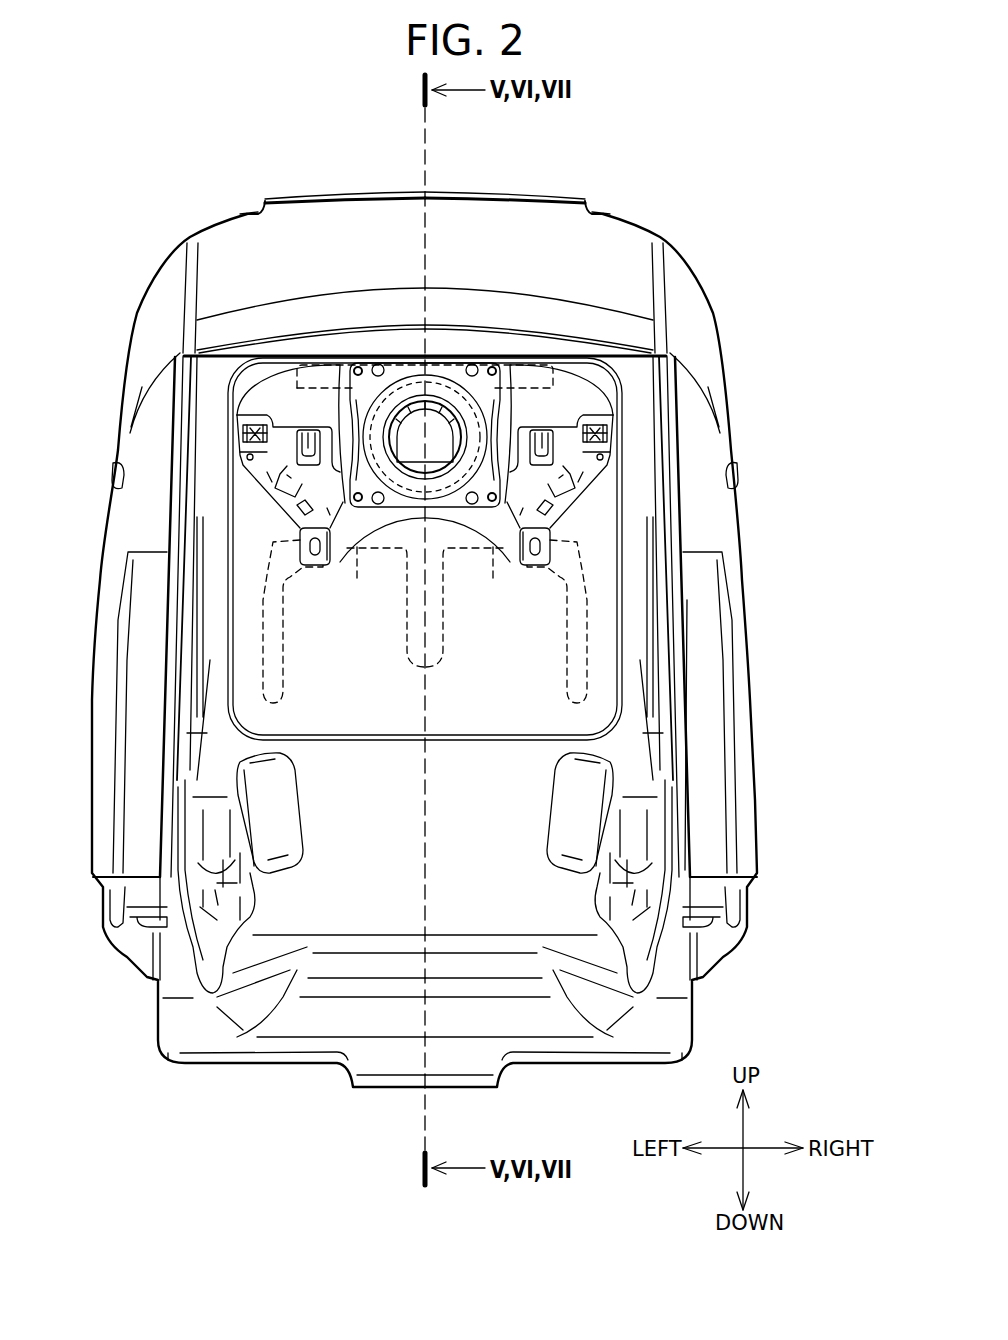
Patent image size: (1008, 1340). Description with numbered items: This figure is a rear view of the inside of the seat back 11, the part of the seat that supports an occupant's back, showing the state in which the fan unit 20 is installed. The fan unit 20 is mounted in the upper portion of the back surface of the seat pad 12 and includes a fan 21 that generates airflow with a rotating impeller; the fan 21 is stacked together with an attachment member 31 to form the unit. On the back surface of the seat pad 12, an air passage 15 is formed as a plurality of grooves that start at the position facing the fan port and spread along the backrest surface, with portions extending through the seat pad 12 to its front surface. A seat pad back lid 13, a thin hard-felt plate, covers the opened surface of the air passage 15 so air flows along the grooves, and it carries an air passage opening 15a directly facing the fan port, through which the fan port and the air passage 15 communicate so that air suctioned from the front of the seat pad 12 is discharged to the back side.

The seat back 11 is at (688, 197).
The seat pad 12 is at (607, 253).
The seat pad back lid 13 is at (507, 693).
The air passage 15 is at (587, 620).
The air passage opening 15a is at (440, 345).
The fan unit 20 is at (567, 397).
The fan 21 is at (395, 356).
The attachment member 31 is at (587, 403).